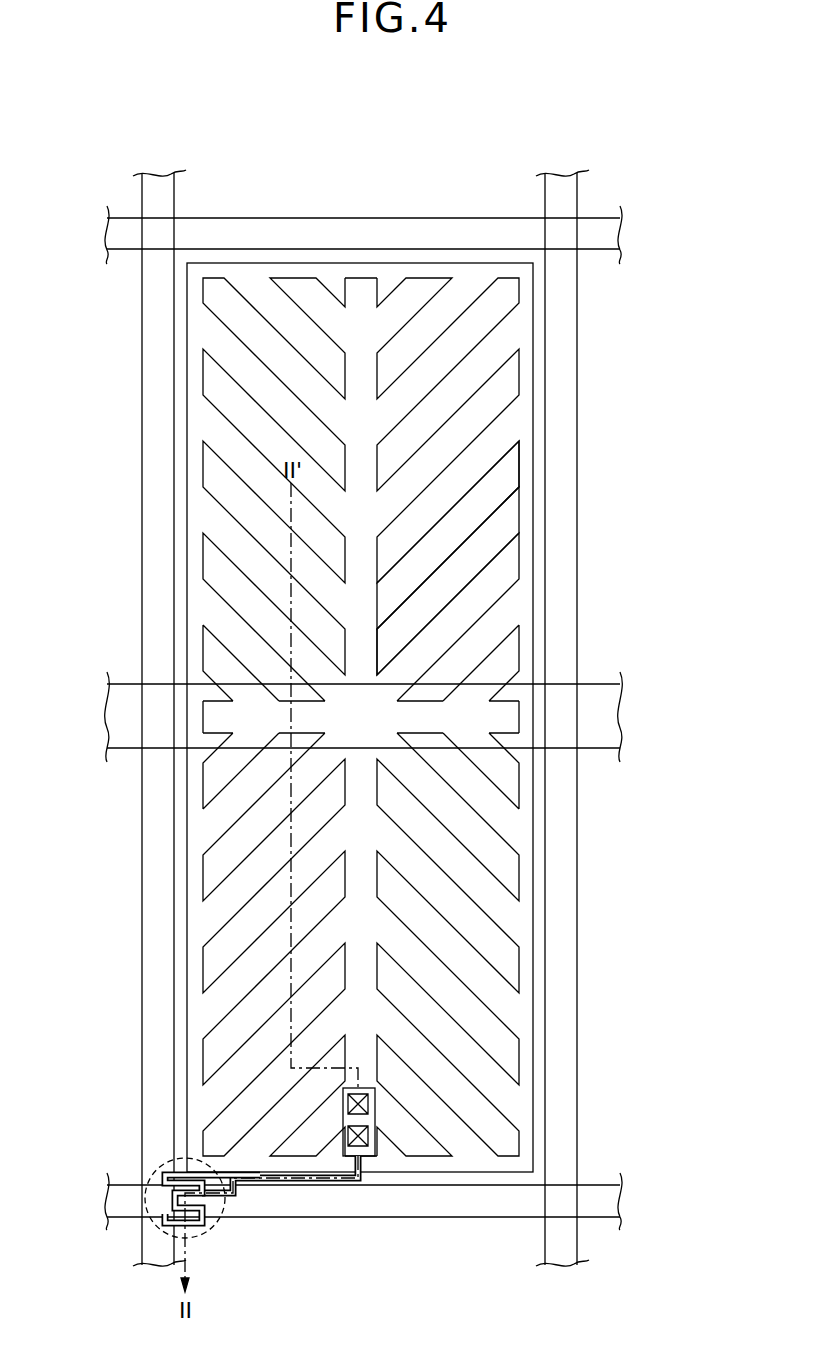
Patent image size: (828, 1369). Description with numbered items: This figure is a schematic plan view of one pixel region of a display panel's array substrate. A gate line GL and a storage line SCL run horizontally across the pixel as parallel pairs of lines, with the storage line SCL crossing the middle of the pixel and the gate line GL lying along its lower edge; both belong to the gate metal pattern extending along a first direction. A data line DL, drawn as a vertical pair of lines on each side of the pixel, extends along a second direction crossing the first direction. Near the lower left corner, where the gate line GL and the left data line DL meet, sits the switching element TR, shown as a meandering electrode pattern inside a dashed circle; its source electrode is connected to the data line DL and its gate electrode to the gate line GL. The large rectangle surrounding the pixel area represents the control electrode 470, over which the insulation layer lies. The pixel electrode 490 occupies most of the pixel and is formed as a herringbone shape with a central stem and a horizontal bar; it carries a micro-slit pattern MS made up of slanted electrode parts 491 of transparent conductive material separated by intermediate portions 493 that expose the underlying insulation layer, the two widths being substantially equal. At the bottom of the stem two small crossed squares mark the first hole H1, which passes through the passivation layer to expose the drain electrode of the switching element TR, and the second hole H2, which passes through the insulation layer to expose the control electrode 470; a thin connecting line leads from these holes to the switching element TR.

The pixel electrode 490 is at (352, 393).
The electrode part 491 is at (508, 462).
The intermediate portion 493 is at (519, 515).
The micro-slit pattern MS is at (546, 558).
The control electrode 470 is at (533, 590).
The storage line SCL is at (607, 716).
The gate line GL is at (610, 1200).
The data line DL is at (149, 1266).
The switching element TR is at (205, 1234).
The first hole H1 is at (369, 1135).
The second hole H2 is at (347, 1108).